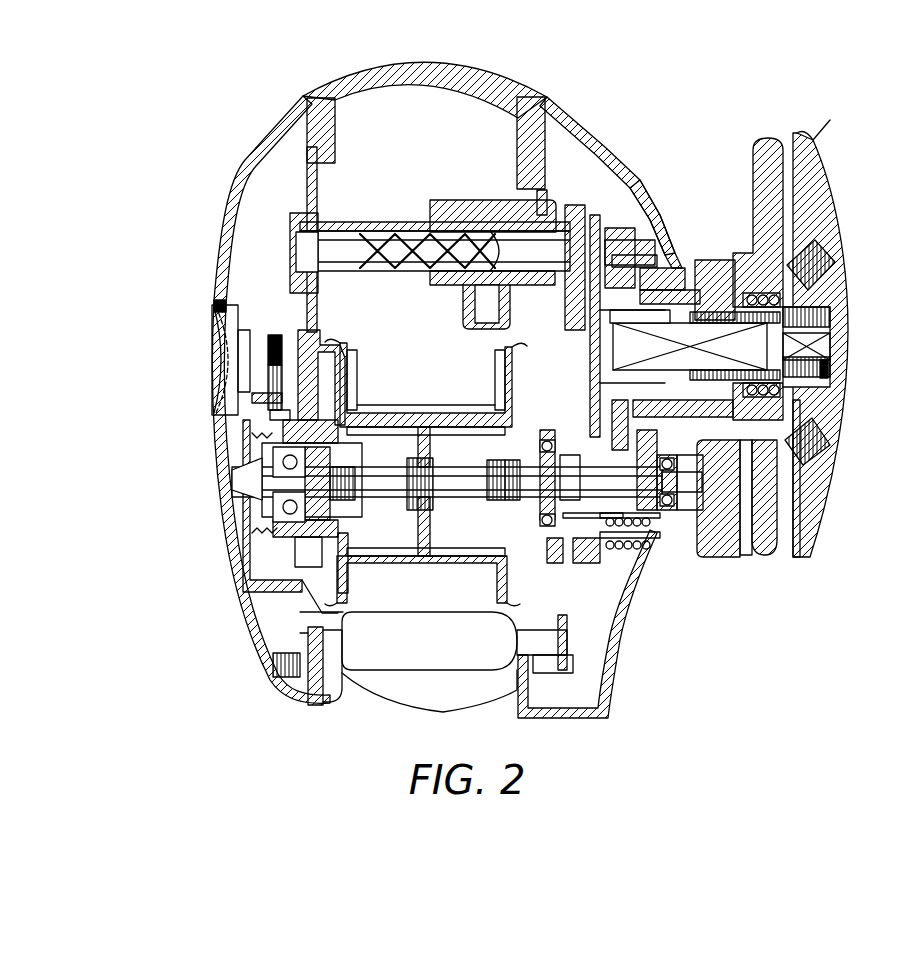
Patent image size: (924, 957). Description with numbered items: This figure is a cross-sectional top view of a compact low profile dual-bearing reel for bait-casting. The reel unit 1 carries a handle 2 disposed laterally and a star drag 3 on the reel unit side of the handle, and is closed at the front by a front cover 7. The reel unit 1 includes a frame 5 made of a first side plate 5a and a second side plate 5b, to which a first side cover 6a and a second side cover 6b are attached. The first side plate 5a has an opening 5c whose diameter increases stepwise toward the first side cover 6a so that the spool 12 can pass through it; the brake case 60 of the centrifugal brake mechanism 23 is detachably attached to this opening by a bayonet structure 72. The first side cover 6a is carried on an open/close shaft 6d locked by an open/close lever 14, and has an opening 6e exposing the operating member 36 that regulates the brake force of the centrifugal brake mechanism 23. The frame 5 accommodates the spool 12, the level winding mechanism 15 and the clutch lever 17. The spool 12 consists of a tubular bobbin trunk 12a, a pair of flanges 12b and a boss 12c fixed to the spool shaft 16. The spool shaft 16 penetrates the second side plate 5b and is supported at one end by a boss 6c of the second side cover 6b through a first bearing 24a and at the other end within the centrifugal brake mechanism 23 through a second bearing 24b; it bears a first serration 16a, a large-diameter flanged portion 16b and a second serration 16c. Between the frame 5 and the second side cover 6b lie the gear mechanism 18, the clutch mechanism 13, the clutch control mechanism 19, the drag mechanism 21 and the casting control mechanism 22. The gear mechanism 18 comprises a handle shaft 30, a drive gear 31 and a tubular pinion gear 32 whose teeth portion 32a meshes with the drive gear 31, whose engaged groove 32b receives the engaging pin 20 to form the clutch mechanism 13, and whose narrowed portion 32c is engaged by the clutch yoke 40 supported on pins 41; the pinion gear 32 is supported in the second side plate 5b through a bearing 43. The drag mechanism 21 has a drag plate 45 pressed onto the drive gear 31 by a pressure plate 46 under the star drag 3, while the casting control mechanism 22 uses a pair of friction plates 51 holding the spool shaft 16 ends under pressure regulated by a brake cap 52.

The reel unit 1 is at (560, 97).
The handle 2 is at (808, 190).
The star drag 3 is at (770, 145).
The frame 5 is at (623, 220).
The first side plate 5a is at (323, 196).
The second side plate 5b is at (538, 212).
The opening 5c is at (347, 348).
The first side cover 6a is at (214, 275).
The second side cover 6b is at (642, 165).
The boss 6c is at (690, 533).
The open/close shaft 6d is at (265, 693).
The opening 6e is at (213, 306).
The front cover 7 is at (400, 86).
The spool 12 is at (420, 420).
The bobbin trunk 12a is at (378, 414).
The flanges 12b is at (345, 395).
The boss 12c is at (400, 458).
The clutch mechanism 13 is at (462, 428).
The open/close lever 14 is at (340, 697).
The level winding mechanism 15 is at (427, 222).
The spool shaft 16 is at (437, 535).
The first serration 16a is at (412, 508).
The flanged portion 16b is at (262, 532).
The second serration 16c is at (282, 482).
The clutch lever 17 is at (393, 636).
The gear mechanism 18 is at (650, 245).
The clutch control mechanism 19 is at (630, 613).
The engaging pin 20 is at (492, 504).
The drag mechanism 21 is at (667, 270).
The casting control mechanism 22 is at (710, 523).
The centrifugal brake mechanism 23 is at (250, 368).
The first bearing 24a is at (753, 477).
The second bearing 24b is at (258, 566).
The handle shaft 30 is at (700, 340).
The drive gear 31 is at (845, 440).
The pinion gear 32 is at (673, 533).
The teeth portion 32a is at (657, 533).
The engaged groove 32b is at (520, 470).
The narrowed portion 32c is at (573, 542).
The operating member 36 is at (207, 360).
The clutch yoke 40 is at (615, 563).
The pins 41 is at (687, 530).
The bearing 43 is at (510, 560).
The drag plate 45 is at (663, 255).
The pressure plate 46 is at (680, 320).
The friction plates 51 is at (252, 462).
The brake cap 52 is at (812, 500).
The brake case 60 is at (255, 432).
The bayonet structure 72 is at (305, 345).